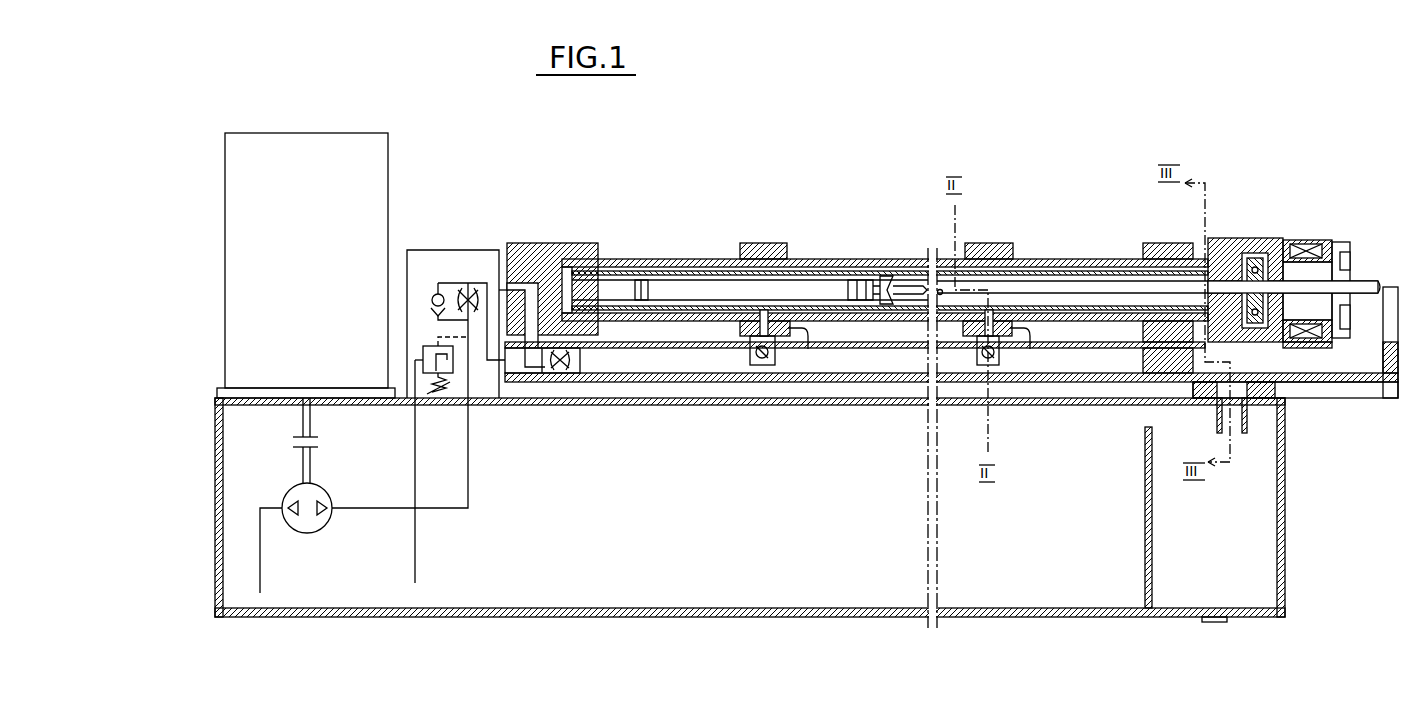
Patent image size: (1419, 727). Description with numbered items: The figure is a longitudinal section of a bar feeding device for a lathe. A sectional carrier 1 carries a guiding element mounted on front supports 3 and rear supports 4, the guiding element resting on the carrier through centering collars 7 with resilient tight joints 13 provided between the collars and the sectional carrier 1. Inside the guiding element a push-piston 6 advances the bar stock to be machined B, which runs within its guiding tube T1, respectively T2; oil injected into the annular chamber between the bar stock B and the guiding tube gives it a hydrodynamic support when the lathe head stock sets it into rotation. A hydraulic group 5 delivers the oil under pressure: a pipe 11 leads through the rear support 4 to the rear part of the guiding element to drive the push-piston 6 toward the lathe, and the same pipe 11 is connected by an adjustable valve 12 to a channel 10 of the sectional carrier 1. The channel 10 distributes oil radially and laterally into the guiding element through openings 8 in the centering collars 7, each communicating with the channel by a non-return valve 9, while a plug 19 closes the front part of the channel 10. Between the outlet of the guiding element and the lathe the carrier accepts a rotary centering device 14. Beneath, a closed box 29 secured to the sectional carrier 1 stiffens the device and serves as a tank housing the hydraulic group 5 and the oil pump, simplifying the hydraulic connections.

The sectional carrier 1 is at (640, 384).
The front support 3 is at (1160, 243).
The rear support 4 is at (527, 250).
The hydraulic group 5 is at (440, 264).
The push-piston 6 is at (693, 288).
The centering collar 7 is at (756, 243).
The opening 8 is at (808, 349).
The non-return valve 9 is at (761, 362).
The channel 10 is at (872, 360).
The pipe 11 is at (517, 360).
The adjustable valve 12 is at (573, 364).
The resilient tight joint 13 is at (742, 333).
The rotary centering device 14 is at (1264, 234).
The plug 19 is at (1158, 360).
The box 29 is at (695, 613).
The guiding tube T1 is at (826, 259).
The guiding tube T2 is at (887, 270).
The bar stock B is at (1025, 286).